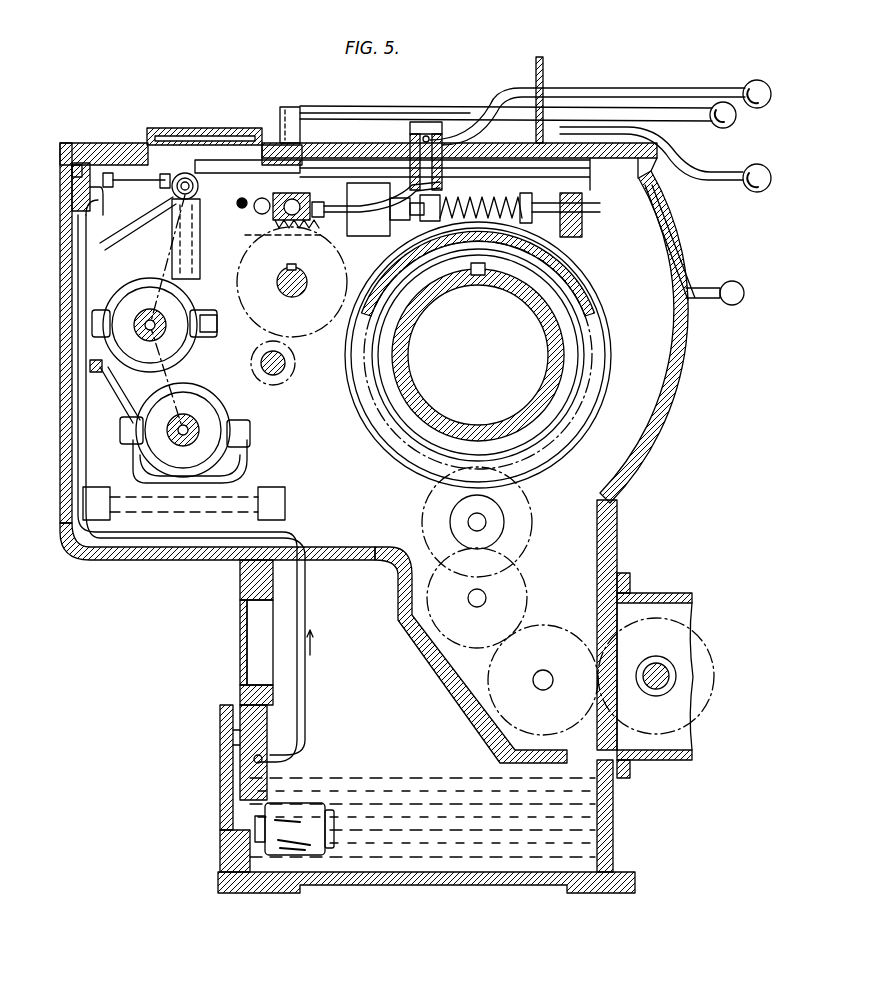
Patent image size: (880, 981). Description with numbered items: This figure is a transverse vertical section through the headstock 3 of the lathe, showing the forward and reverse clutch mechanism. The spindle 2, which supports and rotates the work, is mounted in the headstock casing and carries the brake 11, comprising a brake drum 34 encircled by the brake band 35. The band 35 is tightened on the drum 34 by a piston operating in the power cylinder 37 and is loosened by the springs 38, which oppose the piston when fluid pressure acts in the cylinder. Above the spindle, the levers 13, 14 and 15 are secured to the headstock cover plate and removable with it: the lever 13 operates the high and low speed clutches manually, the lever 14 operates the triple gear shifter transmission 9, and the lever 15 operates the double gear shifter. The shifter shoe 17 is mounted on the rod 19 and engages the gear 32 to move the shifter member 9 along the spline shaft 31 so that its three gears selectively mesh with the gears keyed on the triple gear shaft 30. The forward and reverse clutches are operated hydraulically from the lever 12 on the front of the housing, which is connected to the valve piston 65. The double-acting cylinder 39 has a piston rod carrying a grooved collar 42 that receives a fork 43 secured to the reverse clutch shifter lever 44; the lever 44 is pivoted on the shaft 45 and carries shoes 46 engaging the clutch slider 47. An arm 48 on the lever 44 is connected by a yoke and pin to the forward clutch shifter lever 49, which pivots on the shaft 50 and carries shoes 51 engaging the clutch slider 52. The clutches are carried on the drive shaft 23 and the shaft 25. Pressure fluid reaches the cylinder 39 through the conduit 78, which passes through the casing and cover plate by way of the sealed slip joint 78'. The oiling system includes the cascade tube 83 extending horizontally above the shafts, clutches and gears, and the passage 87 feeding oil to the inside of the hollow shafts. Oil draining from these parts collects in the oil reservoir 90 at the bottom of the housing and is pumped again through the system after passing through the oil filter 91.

The spindle 2 is at (545, 330).
The headstock 3 is at (687, 376).
The triple gear shifter transmission 9 is at (335, 325).
The brake 11 is at (578, 266).
The lever 12 is at (686, 262).
The lever 13 is at (440, 106).
The lever 14 is at (674, 90).
The lever 15 is at (735, 172).
The shifter shoe 17 is at (312, 216).
The rod 19 is at (314, 203).
The drive shaft 23 is at (200, 415).
The shaft 25 is at (150, 342).
The triple gear shaft 30 is at (288, 372).
The spline shaft 31 is at (304, 278).
The gear 32 is at (283, 273).
The brake drum 34 is at (592, 300).
The brake band 35 is at (586, 282).
The power cylinder 37 is at (378, 238).
The springs 38 is at (478, 198).
The double-acting cylinder 39 is at (183, 137).
The grooved collar 42 is at (172, 180).
The fork 43 is at (172, 194).
The reverse clutch shifter lever 44 is at (175, 232).
The shaft 45 is at (78, 250).
The shoes 46 is at (208, 312).
The clutch slider 47 is at (183, 352).
The arm 48 is at (93, 345).
The forward clutch shifter lever 49 is at (125, 455).
The shaft 50 is at (258, 492).
The shoes 51 is at (248, 448).
The clutch slider 52 is at (240, 418).
The valve piston 65 is at (259, 215).
The conduit 78 is at (121, 189).
The sealed slip joint 78' is at (56, 150).
The cascade tube 83 is at (240, 160).
The passage 87 is at (183, 248).
The oil reservoir 90 is at (428, 878).
The oil filter 91 is at (305, 812).